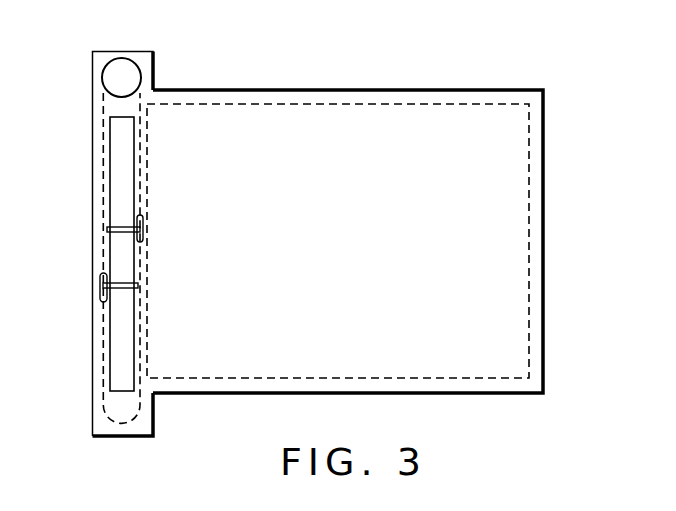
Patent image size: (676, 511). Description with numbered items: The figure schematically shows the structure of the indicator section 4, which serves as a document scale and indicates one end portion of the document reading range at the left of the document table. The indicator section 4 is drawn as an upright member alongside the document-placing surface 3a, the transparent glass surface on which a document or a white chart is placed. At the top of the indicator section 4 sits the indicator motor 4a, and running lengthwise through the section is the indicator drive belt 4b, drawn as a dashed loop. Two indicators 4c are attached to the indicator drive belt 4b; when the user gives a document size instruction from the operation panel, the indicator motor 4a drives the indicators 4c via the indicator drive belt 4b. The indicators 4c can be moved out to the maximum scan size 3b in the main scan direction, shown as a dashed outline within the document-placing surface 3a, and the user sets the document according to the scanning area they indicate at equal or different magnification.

The document-placing surface 3a is at (483, 89).
The maximum scan size 3b is at (293, 103).
The indicator section 4 is at (92, 111).
The indicator motor 4a is at (122, 72).
The indicator drive belt 4b is at (101, 162).
The indicators 4c is at (145, 225).